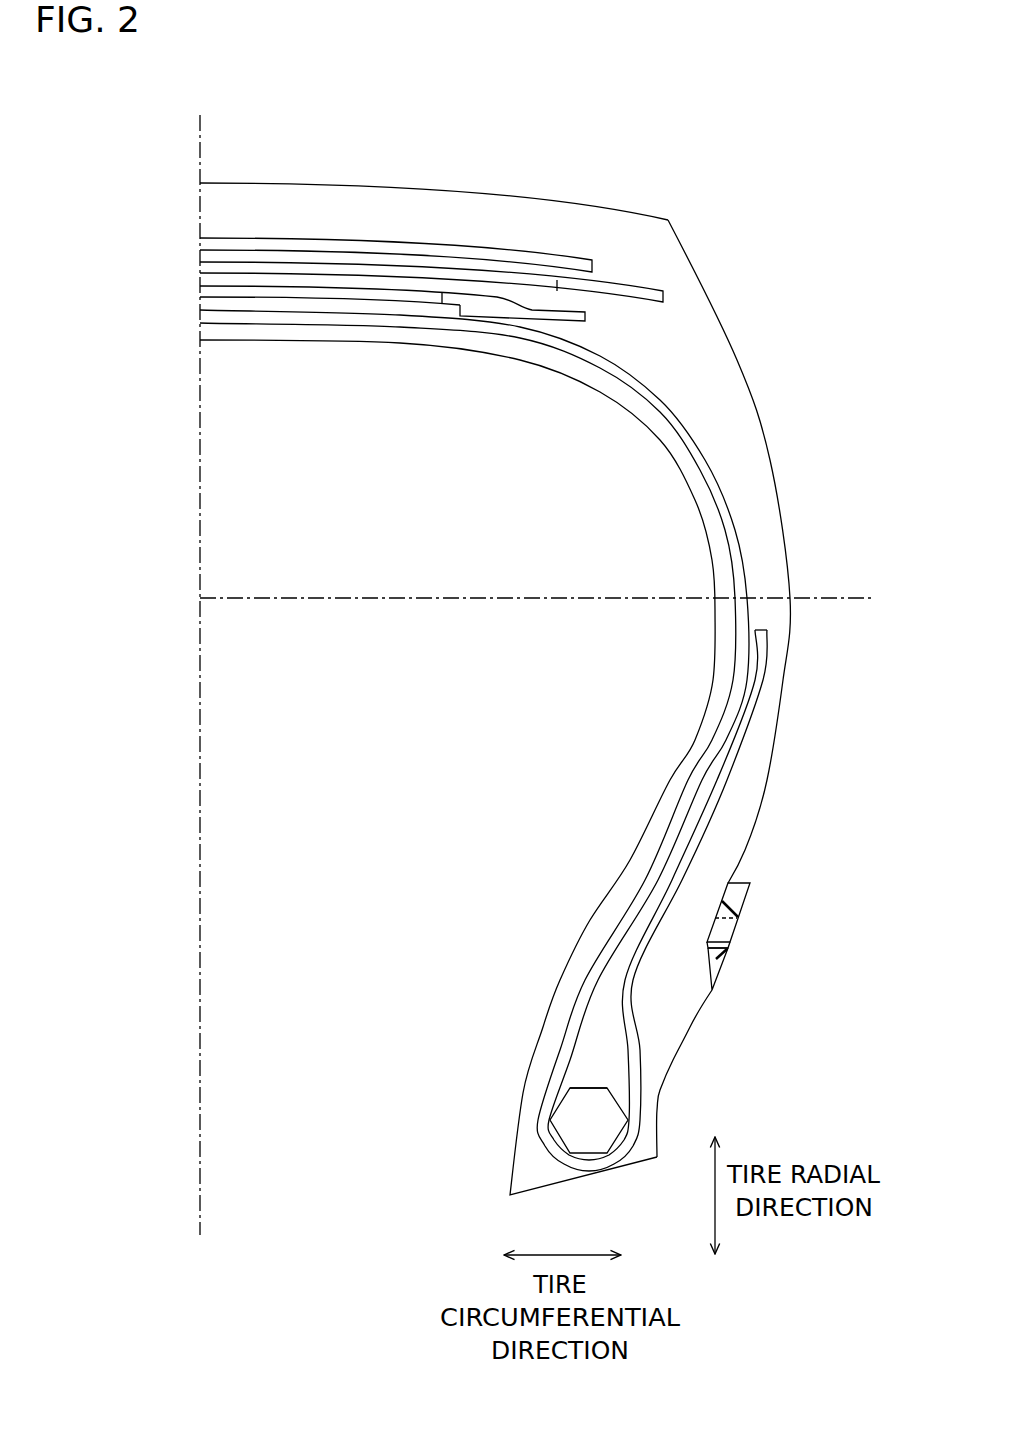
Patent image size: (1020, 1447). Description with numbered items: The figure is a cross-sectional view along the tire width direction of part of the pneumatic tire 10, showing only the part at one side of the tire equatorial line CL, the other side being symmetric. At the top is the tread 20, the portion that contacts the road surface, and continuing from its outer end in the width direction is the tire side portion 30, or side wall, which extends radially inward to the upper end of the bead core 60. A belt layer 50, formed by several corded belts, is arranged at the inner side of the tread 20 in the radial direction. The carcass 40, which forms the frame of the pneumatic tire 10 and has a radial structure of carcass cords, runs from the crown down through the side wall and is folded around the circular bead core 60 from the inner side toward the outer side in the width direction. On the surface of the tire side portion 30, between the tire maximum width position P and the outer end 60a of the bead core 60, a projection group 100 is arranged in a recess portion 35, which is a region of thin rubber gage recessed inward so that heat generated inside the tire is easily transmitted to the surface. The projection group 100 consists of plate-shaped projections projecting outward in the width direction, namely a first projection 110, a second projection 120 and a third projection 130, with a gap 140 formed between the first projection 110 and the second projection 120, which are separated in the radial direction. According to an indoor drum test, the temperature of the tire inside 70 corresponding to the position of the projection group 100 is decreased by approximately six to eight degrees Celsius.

The pneumatic tire 10 is at (653, 140).
The tread 20 is at (392, 185).
The tire side portion 30 is at (792, 540).
The recess portion 35 is at (702, 937).
The carcass 40 is at (735, 635).
The belt layer 50 is at (527, 250).
The bead core 60 is at (575, 1113).
The outer end of the bead core 60a is at (588, 1080).
The tire inside 70 is at (662, 965).
The projection group 100 is at (789, 923).
The first projection 110 is at (735, 975).
The second projection 120 is at (733, 944).
The third projection 130 is at (737, 893).
The gap 140 is at (739, 951).
The tire equatorial line CL is at (195, 447).
The tire maximum width position P is at (792, 597).